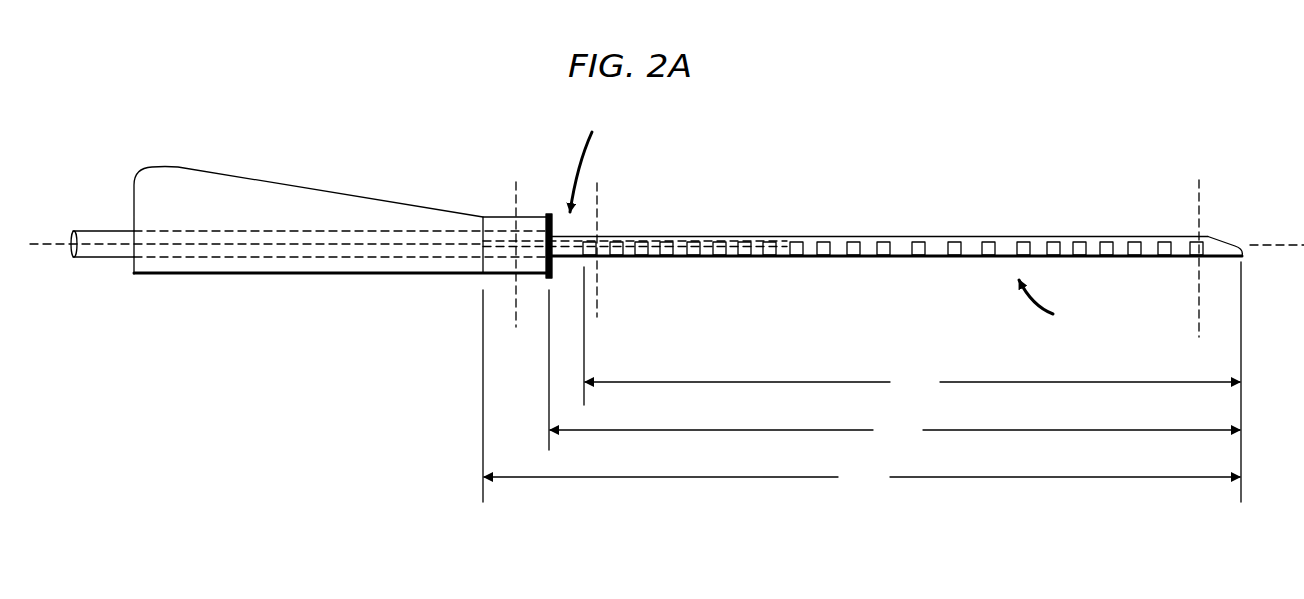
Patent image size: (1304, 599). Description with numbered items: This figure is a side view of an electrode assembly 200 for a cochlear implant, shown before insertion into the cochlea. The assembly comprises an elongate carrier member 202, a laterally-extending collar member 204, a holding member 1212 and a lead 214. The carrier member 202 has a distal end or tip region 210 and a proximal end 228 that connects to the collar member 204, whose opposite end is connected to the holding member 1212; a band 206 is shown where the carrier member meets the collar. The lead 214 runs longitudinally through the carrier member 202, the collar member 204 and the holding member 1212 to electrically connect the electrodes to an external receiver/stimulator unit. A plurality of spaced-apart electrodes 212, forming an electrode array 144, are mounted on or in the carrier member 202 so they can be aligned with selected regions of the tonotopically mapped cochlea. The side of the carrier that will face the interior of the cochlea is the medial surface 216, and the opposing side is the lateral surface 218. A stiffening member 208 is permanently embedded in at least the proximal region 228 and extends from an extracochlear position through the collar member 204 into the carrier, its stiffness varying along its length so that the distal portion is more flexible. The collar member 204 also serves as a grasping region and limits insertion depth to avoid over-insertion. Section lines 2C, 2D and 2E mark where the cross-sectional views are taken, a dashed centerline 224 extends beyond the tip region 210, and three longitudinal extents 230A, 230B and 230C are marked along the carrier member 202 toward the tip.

The electrode assembly 200 is at (217, 122).
The holding member 1212 is at (134, 182).
The lead 214 is at (122, 246).
The collar member 204 is at (492, 222).
The band 206 is at (549, 214).
The proximal end 228 is at (593, 157).
The carrier member 202 is at (1040, 237).
The lateral surface 218 is at (783, 236).
The medial surface 216 is at (780, 258).
The distal end or tip region 210 is at (1242, 247).
The stiffening member 208 is at (626, 243).
The electrodes 212 is at (882, 248).
The longitudinal axis 224 is at (1278, 250).
The electrode array 144 is at (1052, 307).
The section line 2C is at (516, 251).
The section line 2D is at (598, 249).
The section line 2E is at (1198, 249).
The length 230A is at (912, 382).
The length 230B is at (895, 430).
The length 230C is at (862, 479).